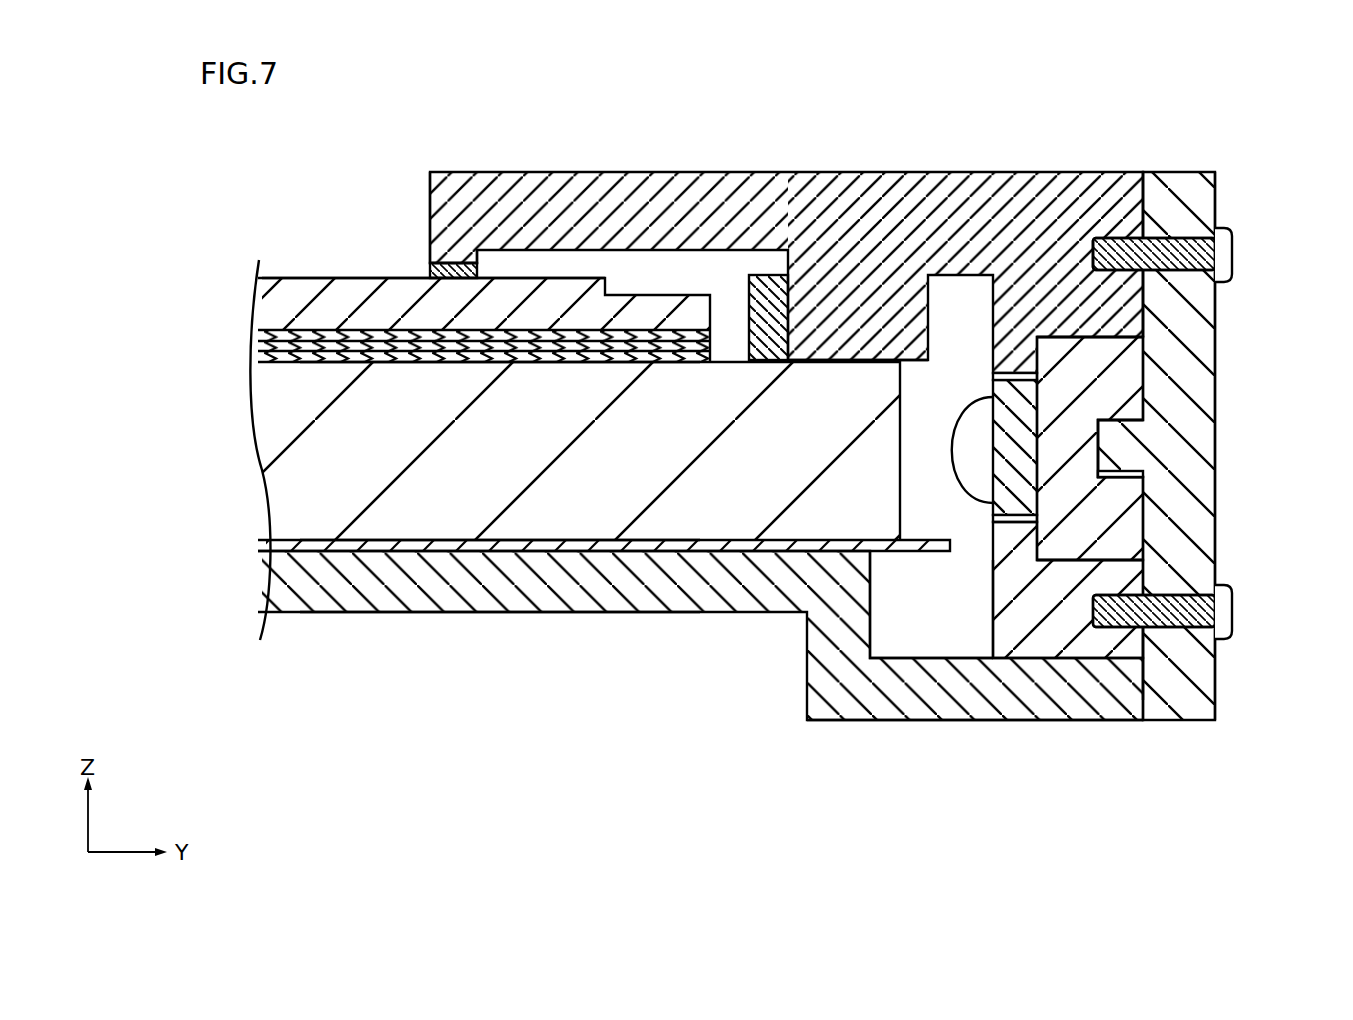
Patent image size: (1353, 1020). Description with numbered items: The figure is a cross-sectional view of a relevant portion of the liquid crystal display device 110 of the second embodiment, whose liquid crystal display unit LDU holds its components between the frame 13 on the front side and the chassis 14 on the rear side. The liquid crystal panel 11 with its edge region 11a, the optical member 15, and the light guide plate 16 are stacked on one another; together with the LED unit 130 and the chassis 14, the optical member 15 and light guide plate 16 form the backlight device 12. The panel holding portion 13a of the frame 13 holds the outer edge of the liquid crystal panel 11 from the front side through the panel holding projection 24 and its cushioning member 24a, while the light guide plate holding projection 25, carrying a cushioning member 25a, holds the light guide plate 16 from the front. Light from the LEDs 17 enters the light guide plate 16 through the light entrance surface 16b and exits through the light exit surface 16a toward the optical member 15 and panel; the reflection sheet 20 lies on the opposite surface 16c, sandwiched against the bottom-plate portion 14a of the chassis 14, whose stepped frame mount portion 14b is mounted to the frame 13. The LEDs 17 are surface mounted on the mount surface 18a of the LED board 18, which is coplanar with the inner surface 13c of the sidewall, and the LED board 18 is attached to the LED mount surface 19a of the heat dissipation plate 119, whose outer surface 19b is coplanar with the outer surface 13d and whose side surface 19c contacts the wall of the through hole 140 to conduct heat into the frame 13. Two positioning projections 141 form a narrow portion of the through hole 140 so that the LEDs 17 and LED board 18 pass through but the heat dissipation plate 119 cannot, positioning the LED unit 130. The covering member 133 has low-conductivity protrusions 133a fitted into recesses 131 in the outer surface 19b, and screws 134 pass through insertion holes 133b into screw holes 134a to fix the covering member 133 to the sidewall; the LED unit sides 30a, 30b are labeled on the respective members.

The liquid crystal display device 110 is at (377, 133).
The liquid crystal panel 11 is at (262, 300).
The upper surface of submount 11a is at (318, 278).
The backlight device 12 is at (506, 740).
The frame 13 is at (905, 225).
The panel holding portion 13a is at (598, 222).
The inner surface of sidewall portion 13c is at (990, 630).
The outer surface of sidewall portion 13d is at (1148, 313).
The chassis 14 is at (300, 585).
The bottom-plate portion 14a is at (420, 598).
The frame mount portion 14b is at (897, 688).
The optical member 15 is at (262, 357).
The light guide plate 16 is at (290, 418).
The light exit surface 16a is at (472, 365).
The light entrance surface 16b is at (903, 500).
The opposite surface 16c is at (600, 548).
The LED 17 is at (972, 430).
The LED board 18 is at (1015, 410).
The mount surface 18a is at (1000, 598).
The LED mount surface 19a is at (1085, 657).
The outer surface of heat dissipation plate 19b is at (1186, 448).
The side surface of heat dissipation plate 19c is at (1150, 660).
The reflection sheet 20 is at (275, 545).
The panel holding projection 24 is at (452, 258).
The cushioning member 24a is at (440, 268).
The light guide plate holding projection 25 is at (815, 312).
The cushioning member 25a is at (765, 300).
The lower heat transfer member 30a is at (1062, 580).
The upper heat transfer member 30b is at (1112, 380).
The heat dissipation plate 119 is at (1078, 352).
The LED unit 130 is at (1117, 267).
The recess 131 is at (1125, 475).
The covering member 133 is at (1190, 182).
The protrusion 133a is at (1120, 440).
The insertion hole 133b is at (1222, 222).
The screw 134 is at (1235, 240).
The screw hole 134a is at (1130, 262).
The through hole 140 is at (1113, 548).
The positioning projection 141 is at (1037, 378).